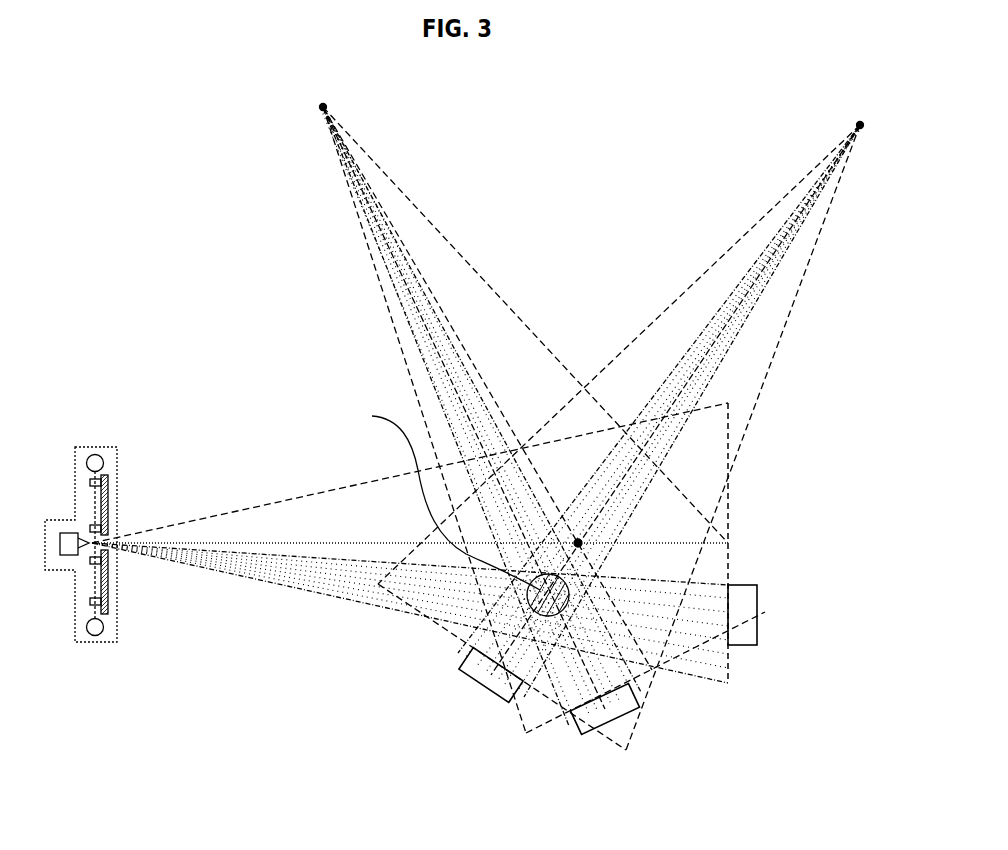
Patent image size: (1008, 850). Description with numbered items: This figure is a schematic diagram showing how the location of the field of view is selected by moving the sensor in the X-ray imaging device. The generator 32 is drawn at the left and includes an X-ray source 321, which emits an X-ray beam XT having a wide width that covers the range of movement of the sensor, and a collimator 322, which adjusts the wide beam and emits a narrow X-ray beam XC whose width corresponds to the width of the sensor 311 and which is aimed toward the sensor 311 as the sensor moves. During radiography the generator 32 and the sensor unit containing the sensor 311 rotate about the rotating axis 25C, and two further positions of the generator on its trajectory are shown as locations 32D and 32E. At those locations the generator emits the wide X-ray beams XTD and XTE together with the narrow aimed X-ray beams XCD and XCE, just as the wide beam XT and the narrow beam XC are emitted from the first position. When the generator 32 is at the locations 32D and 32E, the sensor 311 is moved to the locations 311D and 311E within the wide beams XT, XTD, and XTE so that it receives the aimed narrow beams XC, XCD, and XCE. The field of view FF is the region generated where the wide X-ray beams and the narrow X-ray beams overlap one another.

The generator 32 is at (118, 625).
The X-ray source 321 is at (66, 532).
The collimator 322 is at (112, 444).
The location of the generator 32D is at (518, 404).
The location of the generator 32E is at (628, 424).
The X-ray beam XC is at (720, 568).
The narrow X-ray beam XCD is at (412, 331).
The narrow X-ray beam XCE is at (742, 280).
The rotating axis 25C is at (578, 539).
The field of view FF is at (372, 416).
The X-ray beam XT is at (733, 684).
The wide X-ray beam XTD is at (546, 736).
The wide X-ray beam XTE is at (442, 628).
The sensor 311 is at (759, 618).
The location of the sensor 311D is at (606, 727).
The location of the sensor 311E is at (470, 685).